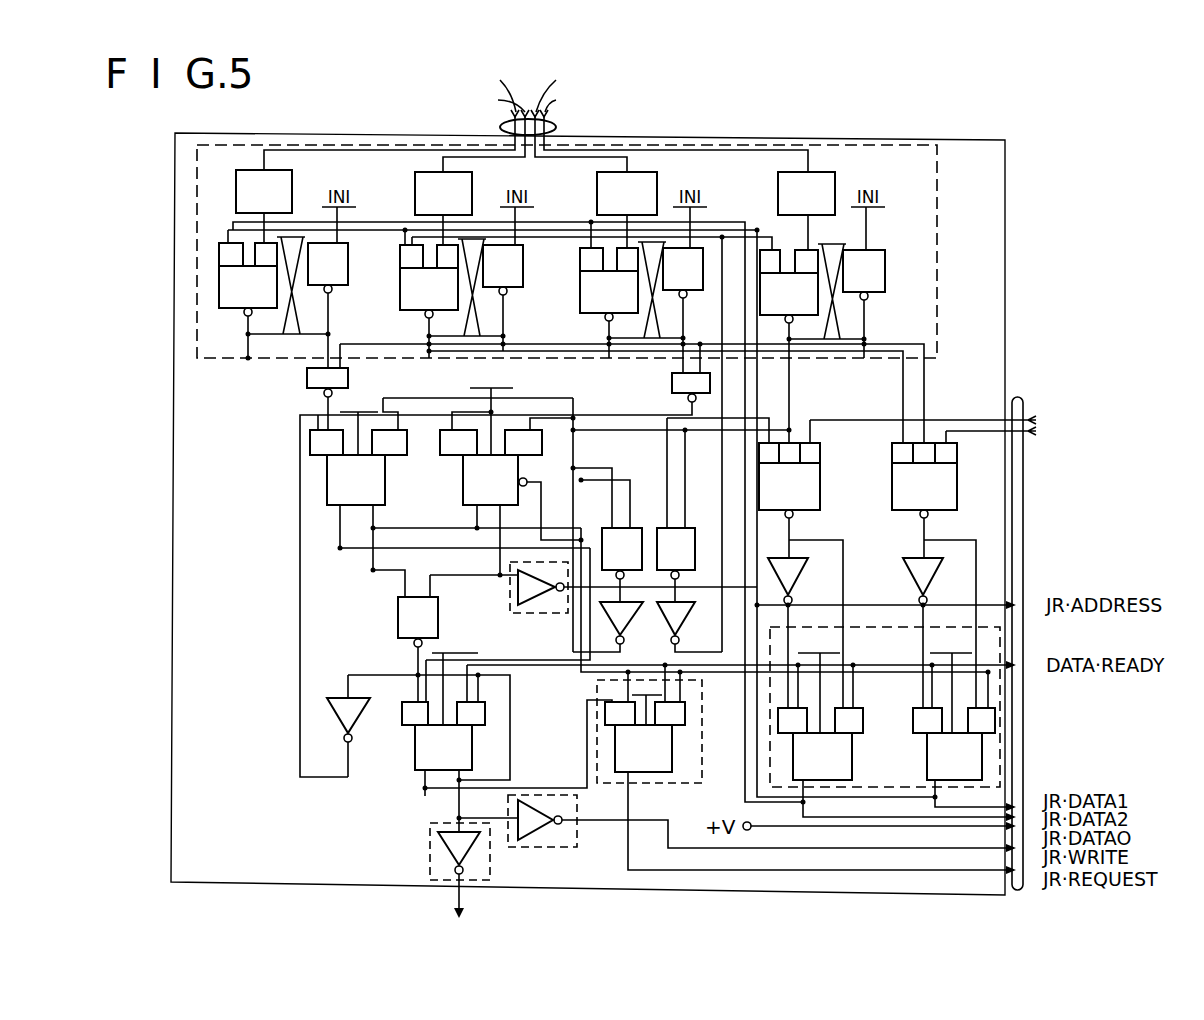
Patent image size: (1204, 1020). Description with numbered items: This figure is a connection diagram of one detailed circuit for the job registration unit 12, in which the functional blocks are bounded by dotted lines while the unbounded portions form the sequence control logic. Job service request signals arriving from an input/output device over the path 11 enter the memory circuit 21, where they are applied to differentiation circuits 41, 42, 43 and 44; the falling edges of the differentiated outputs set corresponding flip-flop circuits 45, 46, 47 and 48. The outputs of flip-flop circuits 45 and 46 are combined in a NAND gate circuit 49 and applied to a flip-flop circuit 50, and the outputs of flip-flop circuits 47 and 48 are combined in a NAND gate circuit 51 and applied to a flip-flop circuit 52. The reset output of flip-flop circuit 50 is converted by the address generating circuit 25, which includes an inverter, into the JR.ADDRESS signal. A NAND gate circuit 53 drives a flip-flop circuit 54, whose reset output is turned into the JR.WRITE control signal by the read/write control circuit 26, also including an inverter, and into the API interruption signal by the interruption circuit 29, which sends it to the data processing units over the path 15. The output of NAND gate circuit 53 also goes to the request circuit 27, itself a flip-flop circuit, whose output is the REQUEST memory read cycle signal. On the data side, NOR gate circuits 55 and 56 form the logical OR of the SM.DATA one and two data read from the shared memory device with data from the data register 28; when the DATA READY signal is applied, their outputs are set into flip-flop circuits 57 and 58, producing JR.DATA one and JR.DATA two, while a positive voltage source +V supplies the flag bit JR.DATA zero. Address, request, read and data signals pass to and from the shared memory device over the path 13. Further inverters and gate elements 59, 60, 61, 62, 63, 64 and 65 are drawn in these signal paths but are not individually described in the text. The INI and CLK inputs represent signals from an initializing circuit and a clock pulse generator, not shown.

The path 11 is at (556, 127).
The job registration unit 12 is at (1006, 143).
The path 13 is at (1021, 405).
The path 15 is at (455, 893).
The memory circuit 21 is at (938, 194).
The address generating circuit 25 is at (510, 600).
The read/write control circuit 26 is at (548, 847).
The request circuit 27 is at (660, 783).
The data register 28 is at (891, 722).
The interruption circuit 29 is at (430, 843).
The differentiation circuit 41 is at (835, 192).
The differentiation circuit 42 is at (657, 192).
The differentiation circuit 43 is at (472, 190).
The differentiation circuit 44 is at (292, 180).
The flip-flop circuit 45 is at (778, 248).
The flip-flop circuit 46 is at (580, 292).
The flip-flop circuit 47 is at (400, 290).
The flip-flop circuit 48 is at (219, 280).
The NAND gate circuit 49 is at (672, 384).
The flip-flop circuit 50 is at (463, 488).
The NAND gate circuit 51 is at (307, 380).
The flip-flop circuit 52 is at (327, 488).
The NAND gate circuit 53 is at (398, 618).
The flip-flop circuit 54 is at (415, 752).
The NOR gate circuit 55 is at (957, 492).
The NOR gate circuit 56 is at (822, 492).
The flip-flop circuit 57 is at (852, 750).
The flip-flop circuit 58 is at (927, 762).
The inverter 59 is at (910, 572).
The inverter 60 is at (800, 572).
The AND gate 61 is at (695, 530).
The AND gate 62 is at (642, 530).
The inverter 63 is at (690, 614).
The inverter 64 is at (634, 614).
The inverter 65 is at (333, 699).